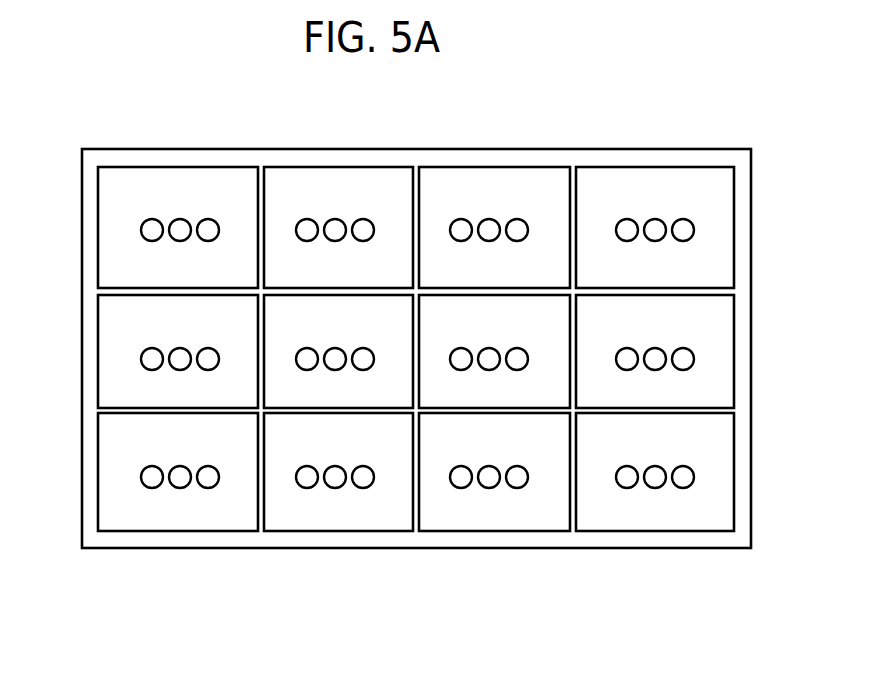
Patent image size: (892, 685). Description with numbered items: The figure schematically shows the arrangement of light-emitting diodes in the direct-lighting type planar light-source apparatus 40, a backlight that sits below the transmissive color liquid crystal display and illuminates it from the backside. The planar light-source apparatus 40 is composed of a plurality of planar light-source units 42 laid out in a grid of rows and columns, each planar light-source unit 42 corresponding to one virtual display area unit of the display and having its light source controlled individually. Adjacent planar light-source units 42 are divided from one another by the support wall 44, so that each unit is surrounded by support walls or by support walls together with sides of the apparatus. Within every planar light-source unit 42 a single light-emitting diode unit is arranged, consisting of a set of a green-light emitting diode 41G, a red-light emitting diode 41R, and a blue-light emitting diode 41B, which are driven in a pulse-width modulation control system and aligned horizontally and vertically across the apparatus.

The planar light-source apparatus 40 is at (360, 133).
The planar light-source unit 42 is at (497, 178).
The support wall 44 is at (258, 522).
The green-light emitting diode 41G is at (152, 219).
The red-light emitting diode 41R is at (180, 219).
The blue-light emitting diode 41B is at (208, 219).